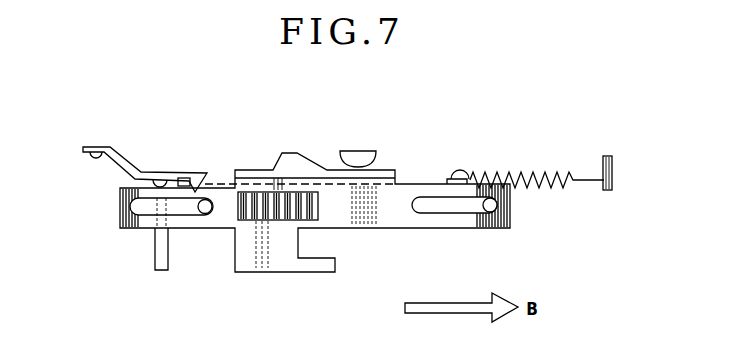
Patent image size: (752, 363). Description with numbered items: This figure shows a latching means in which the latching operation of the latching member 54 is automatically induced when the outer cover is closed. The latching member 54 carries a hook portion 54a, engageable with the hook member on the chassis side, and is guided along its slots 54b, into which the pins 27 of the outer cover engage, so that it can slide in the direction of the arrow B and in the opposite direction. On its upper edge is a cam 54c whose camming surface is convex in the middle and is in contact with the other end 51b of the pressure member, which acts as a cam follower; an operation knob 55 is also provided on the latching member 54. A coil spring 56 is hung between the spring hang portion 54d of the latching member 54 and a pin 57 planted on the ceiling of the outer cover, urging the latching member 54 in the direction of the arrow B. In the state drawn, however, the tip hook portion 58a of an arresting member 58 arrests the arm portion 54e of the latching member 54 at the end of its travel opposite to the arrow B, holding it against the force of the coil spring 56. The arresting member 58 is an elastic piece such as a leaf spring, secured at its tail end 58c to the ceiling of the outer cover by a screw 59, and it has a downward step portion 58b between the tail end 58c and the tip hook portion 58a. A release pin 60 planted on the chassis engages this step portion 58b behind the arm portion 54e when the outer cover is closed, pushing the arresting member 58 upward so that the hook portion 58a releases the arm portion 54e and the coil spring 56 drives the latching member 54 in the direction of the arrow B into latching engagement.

The pin 27 is at (211, 216).
The other end of pressure member 51b is at (363, 150).
The latching member 54 is at (338, 220).
The hook portion 54a is at (288, 272).
The slot 54b is at (142, 230).
The cam 54c is at (292, 153).
The spring hang portion 54d is at (452, 172).
The arm portion 54e is at (183, 177).
The operation knob 55 is at (263, 220).
The coil spring 56 is at (548, 172).
The pin 57 is at (605, 156).
The arresting member 58 is at (120, 165).
The tip hook portion 58a is at (206, 174).
The step portion 58b is at (160, 176).
The tail end 58c is at (97, 146).
The screw 59 is at (97, 157).
The release pin 60 is at (161, 270).